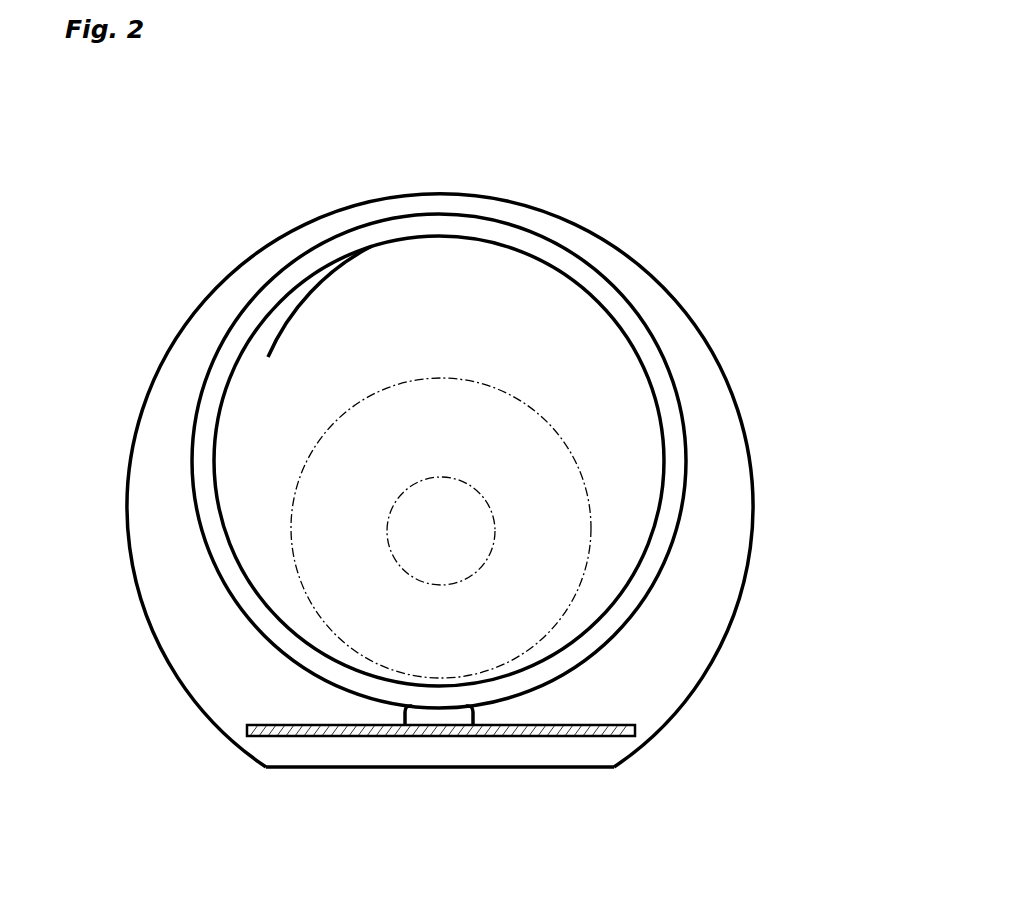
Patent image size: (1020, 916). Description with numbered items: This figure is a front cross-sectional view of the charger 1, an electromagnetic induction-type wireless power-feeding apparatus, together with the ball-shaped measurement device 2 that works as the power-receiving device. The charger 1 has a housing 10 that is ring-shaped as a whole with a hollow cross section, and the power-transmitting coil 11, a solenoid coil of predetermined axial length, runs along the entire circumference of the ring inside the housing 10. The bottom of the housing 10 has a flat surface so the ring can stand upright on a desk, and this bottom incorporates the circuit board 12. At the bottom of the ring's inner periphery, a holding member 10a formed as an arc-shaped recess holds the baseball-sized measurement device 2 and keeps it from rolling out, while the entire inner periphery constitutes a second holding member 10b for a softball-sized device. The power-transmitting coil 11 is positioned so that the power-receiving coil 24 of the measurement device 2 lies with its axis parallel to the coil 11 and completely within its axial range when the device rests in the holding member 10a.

The charger 1 is at (542, 204).
The housing 10 is at (712, 353).
The holding member 10a is at (443, 682).
The second holding member 10b is at (372, 250).
The power-transmitting coil 11 is at (627, 297).
The circuit board 12 is at (553, 737).
The ball-shaped measurement device 2 is at (440, 378).
The power-receiving coil 24 is at (448, 476).